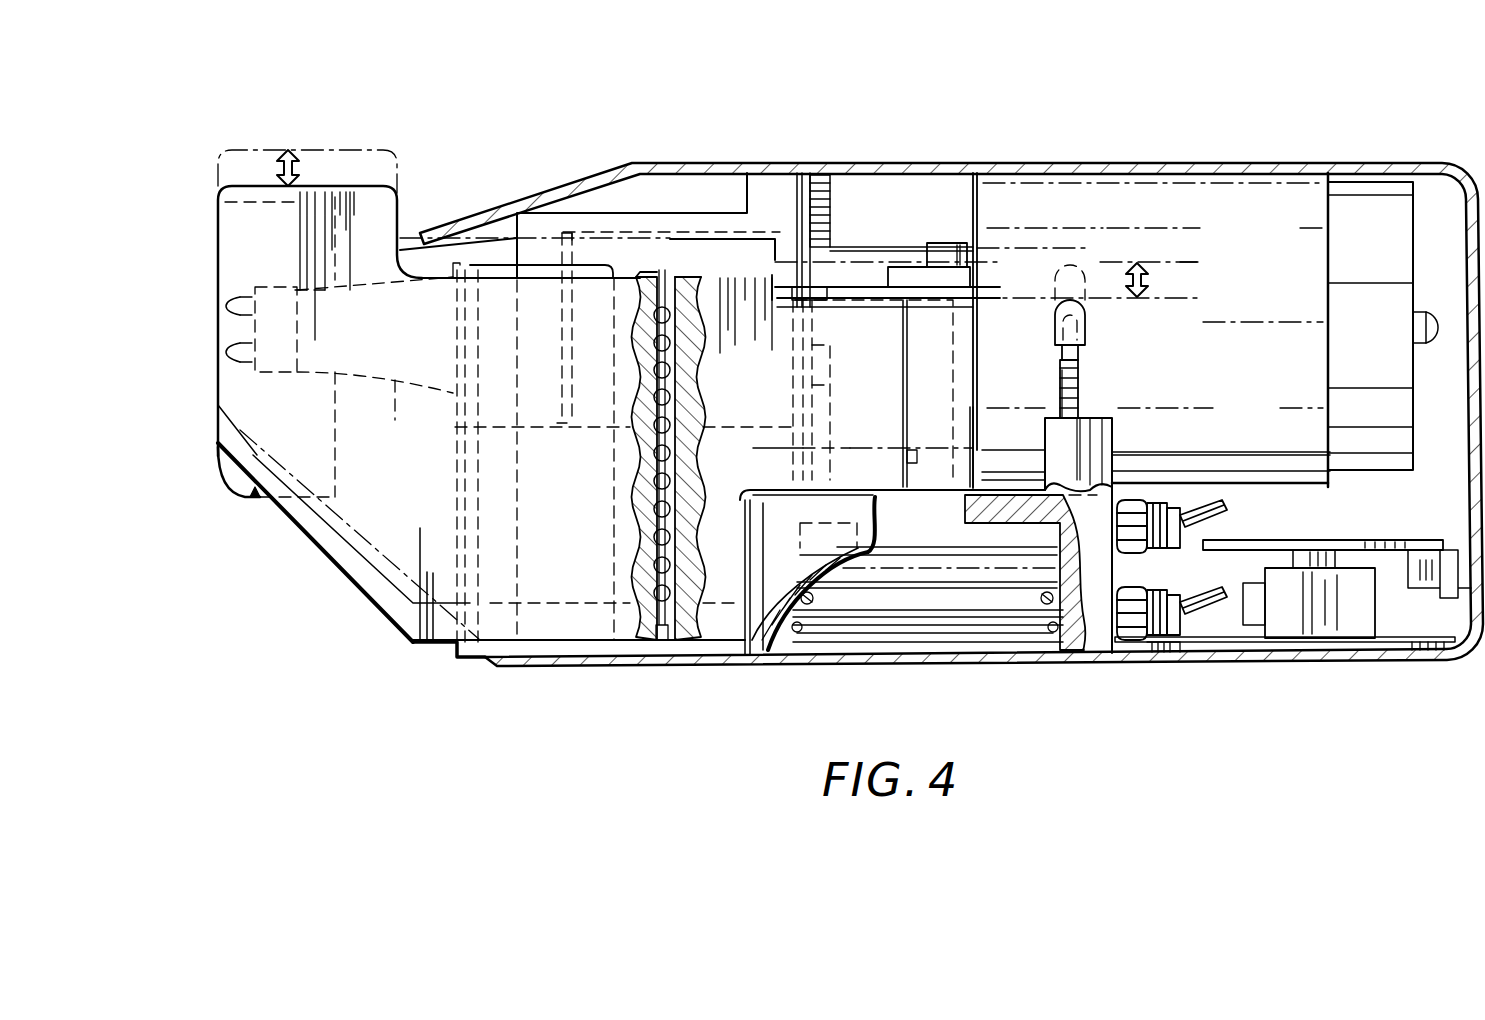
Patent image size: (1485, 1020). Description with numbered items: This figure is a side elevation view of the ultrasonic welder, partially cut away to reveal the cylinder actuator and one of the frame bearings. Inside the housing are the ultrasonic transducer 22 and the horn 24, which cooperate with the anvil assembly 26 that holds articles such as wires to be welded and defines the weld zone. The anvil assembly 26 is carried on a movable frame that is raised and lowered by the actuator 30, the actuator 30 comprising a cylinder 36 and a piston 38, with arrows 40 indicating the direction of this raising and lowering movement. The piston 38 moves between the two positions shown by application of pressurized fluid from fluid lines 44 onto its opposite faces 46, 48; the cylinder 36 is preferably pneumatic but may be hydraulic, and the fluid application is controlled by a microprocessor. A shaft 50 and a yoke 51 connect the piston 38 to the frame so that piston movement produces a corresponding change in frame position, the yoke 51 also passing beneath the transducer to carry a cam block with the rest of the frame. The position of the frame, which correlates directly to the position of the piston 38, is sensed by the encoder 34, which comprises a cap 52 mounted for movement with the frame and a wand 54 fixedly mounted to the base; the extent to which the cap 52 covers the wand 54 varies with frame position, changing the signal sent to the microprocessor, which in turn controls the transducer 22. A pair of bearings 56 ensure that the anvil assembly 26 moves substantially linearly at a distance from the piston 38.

The ultrasonic transducer 22 is at (1270, 403).
The horn 24 is at (354, 387).
The anvil assembly 26 is at (257, 400).
The actuator 30 is at (1083, 605).
The encoder 34 is at (1087, 343).
The cylinder 36 is at (767, 650).
The piston 38 is at (907, 597).
The arrows 40 is at (300, 172).
The fluid lines 44 is at (1207, 520).
The face of piston 46 is at (830, 617).
The face of piston 48 is at (893, 570).
The shaft 50 is at (960, 503).
The yoke 51 is at (903, 480).
The cap 52 is at (1083, 317).
The wand 54 is at (1080, 358).
The bearings 56 is at (661, 272).